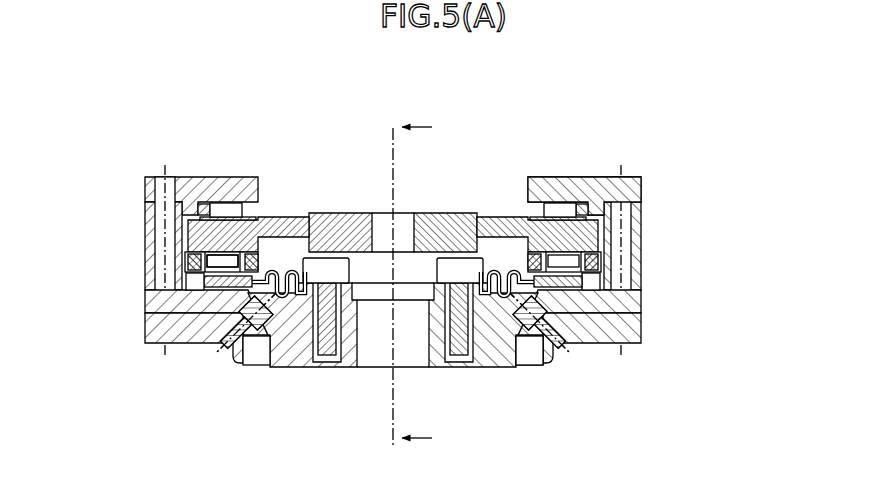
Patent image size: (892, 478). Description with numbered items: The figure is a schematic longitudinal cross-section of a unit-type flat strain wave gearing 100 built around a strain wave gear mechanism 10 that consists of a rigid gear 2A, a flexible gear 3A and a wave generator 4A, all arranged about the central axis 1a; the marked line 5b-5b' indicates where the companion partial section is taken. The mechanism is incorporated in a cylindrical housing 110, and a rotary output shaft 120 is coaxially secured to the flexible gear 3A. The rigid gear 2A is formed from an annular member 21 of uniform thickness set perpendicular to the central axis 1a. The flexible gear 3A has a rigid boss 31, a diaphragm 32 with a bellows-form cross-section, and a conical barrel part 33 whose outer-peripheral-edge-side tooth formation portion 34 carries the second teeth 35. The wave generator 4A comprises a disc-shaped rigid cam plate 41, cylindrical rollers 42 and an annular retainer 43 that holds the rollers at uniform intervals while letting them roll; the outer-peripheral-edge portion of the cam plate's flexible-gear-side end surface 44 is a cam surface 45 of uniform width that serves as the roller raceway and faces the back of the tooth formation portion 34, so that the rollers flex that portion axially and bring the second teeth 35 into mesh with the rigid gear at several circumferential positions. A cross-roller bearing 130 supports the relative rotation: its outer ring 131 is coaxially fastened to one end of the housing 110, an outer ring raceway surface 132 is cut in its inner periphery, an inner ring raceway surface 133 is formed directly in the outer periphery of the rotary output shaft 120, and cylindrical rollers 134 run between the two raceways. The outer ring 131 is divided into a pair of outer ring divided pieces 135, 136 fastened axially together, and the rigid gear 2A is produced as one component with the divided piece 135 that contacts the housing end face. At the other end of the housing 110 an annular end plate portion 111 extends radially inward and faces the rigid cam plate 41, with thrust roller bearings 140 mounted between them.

The unit-type flat strain wave gearing 100 is at (208, 146).
The cylindrical housing 110 is at (408, 224).
The annular end plate portion 111 is at (545, 185).
The rotary output shaft 120 is at (381, 359).
The cross-roller bearing 130 is at (473, 357).
The outer ring 131 is at (473, 331).
The outer ring raceway surface 132 is at (568, 344).
The inner ring raceway surface 133 is at (526, 347).
The cylindrical rollers 134 is at (562, 347).
The outer ring divided piece 135 is at (643, 300).
The outer ring divided piece 136 is at (643, 330).
The thrust roller bearings 140 is at (557, 203).
The central axis 1a is at (386, 169).
The line 5b-5b' 5b is at (427, 115).
The line 5b- 5b' is at (429, 445).
The strain wave gear mechanism 10 is at (478, 236).
The rigid gear 2A is at (592, 294).
The flexible gear 3A is at (597, 275).
The wave generator 4A is at (611, 241).
The annular member 21 is at (550, 280).
The rigid boss 31 is at (293, 305).
The diaphragm 32 is at (264, 348).
The conical barrel part 33 is at (250, 305).
The tooth formation portion 34 is at (185, 335).
The second teeth 35 is at (247, 321).
The rigid cam plate 41 is at (183, 240).
The cylindrical rollers 42 is at (237, 262).
The annular retainer 43 is at (193, 280).
The end surface 44 is at (244, 185).
The cam surface 45 is at (186, 284).